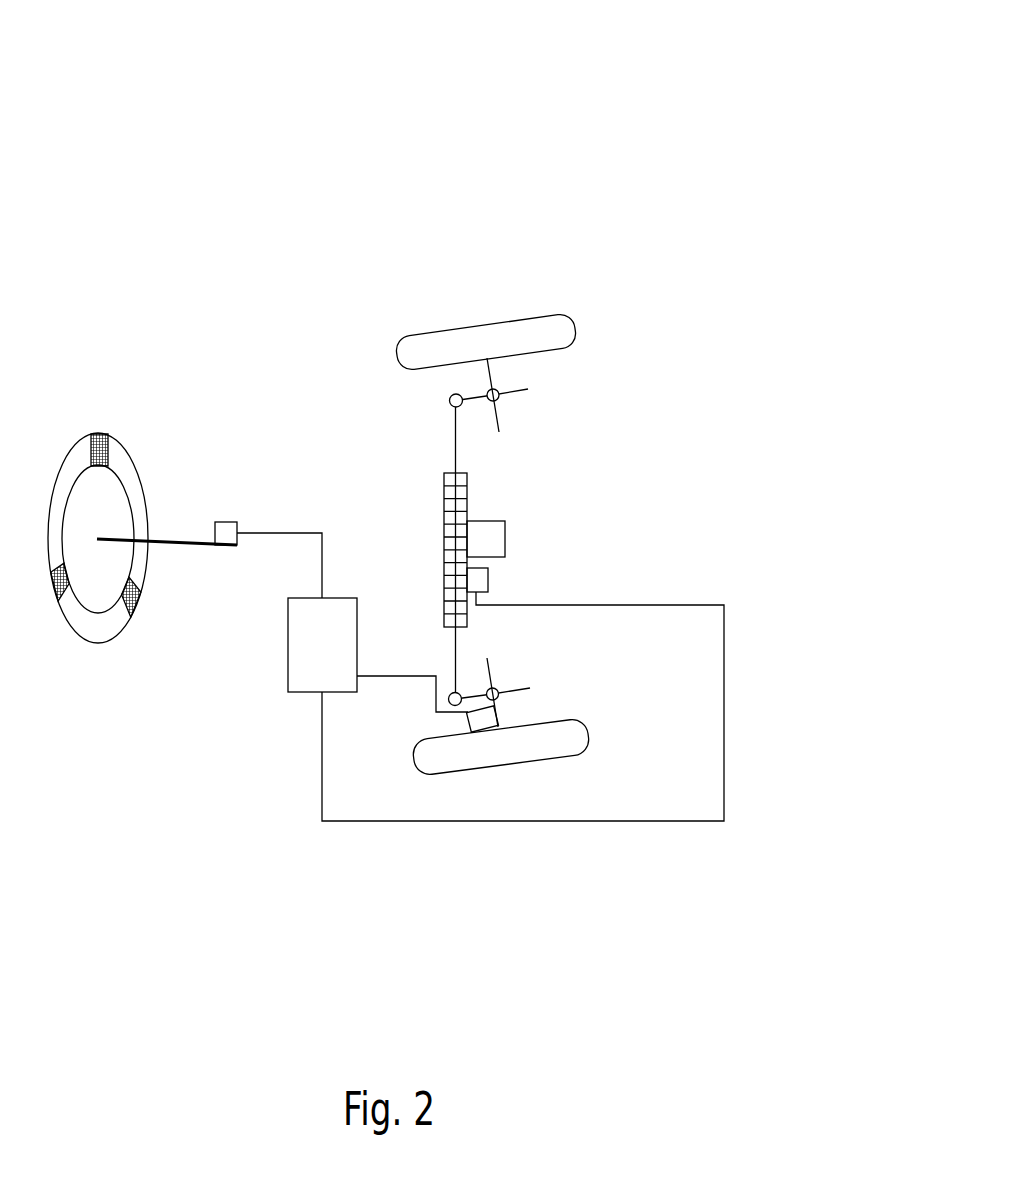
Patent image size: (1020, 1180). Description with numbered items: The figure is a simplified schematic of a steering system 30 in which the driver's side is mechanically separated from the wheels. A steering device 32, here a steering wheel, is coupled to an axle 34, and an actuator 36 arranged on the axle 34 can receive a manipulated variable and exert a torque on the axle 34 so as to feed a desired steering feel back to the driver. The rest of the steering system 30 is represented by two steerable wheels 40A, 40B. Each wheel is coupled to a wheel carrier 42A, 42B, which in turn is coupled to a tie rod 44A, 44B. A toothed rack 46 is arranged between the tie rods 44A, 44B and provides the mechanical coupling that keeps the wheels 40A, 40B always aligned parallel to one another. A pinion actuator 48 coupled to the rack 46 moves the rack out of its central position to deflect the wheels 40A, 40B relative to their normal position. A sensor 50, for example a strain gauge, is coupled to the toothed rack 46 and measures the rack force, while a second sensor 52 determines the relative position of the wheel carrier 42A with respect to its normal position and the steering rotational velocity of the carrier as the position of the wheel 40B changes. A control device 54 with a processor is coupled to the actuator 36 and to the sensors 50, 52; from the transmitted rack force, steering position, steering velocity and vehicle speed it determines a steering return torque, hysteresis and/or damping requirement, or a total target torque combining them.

The steering system 30 is at (640, 107).
The steering device 32 is at (86, 438).
The axle 34 is at (165, 540).
The actuator 36 is at (230, 523).
The steerable wheel 40A is at (572, 327).
The steerable wheel 40B is at (589, 737).
The wheel carrier 42A is at (502, 418).
The wheel carrier 42B is at (493, 672).
The tie rod 44A is at (522, 388).
The tie rod 44B is at (522, 696).
The toothed rack 46 is at (443, 492).
The actuator 48 is at (495, 537).
The sensor 50 is at (483, 582).
The second sensor 52 is at (469, 719).
The control device 54 is at (342, 661).